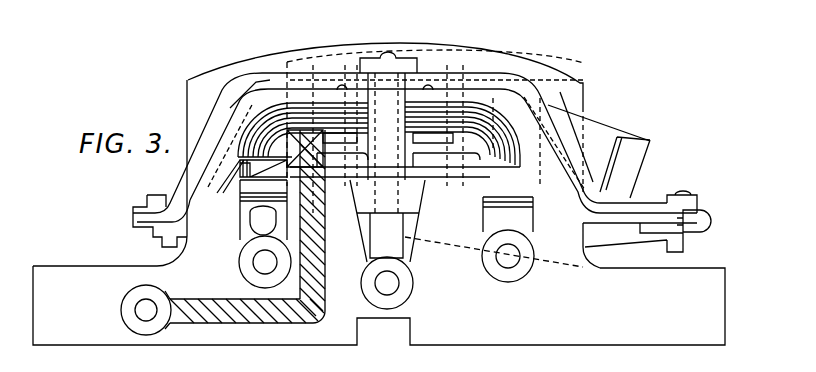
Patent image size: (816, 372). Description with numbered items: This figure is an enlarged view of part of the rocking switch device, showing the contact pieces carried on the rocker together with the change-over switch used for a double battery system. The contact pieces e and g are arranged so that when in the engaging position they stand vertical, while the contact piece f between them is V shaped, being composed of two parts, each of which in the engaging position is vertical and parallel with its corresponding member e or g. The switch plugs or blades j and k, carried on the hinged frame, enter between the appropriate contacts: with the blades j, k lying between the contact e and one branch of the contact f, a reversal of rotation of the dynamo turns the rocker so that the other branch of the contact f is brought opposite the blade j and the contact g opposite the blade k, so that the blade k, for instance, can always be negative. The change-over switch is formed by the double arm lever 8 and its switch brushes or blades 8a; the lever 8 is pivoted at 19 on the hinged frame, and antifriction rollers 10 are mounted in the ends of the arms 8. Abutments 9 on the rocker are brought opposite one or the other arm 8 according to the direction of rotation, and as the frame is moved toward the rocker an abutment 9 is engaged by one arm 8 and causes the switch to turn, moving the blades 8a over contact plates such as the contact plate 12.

The double arm lever 8 is at (220, 193).
The switch brushes or blades 8a is at (260, 93).
The abutment 9 is at (238, 123).
The antifriction roller 10 is at (707, 221).
The contact plate 12 is at (344, 186).
The pivot 19 is at (403, 214).
The contact piece e is at (313, 62).
The contact piece f is at (550, 100).
The contact piece g is at (622, 147).
The switch plug or blade j is at (347, 70).
The switch plug or blade k is at (440, 70).